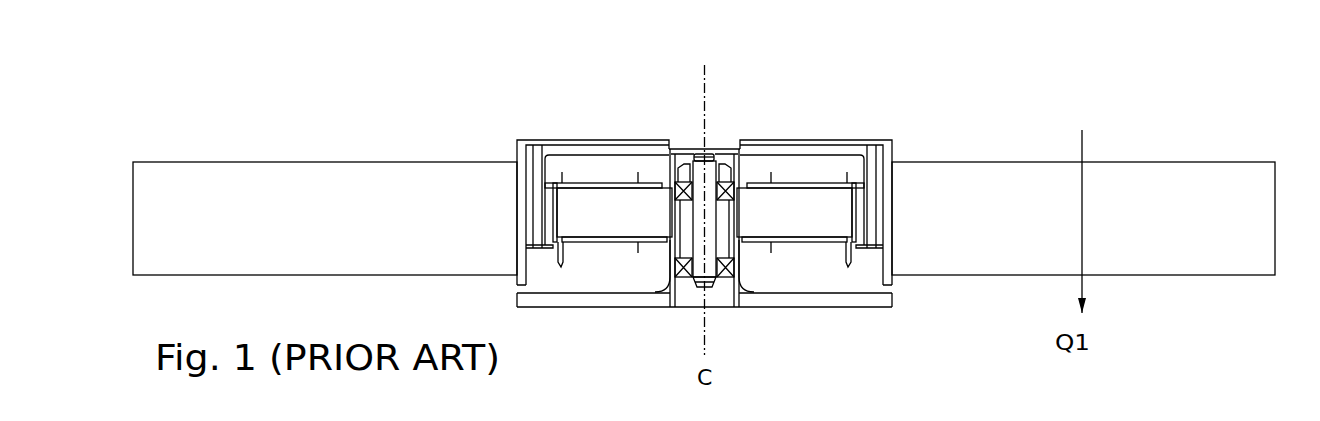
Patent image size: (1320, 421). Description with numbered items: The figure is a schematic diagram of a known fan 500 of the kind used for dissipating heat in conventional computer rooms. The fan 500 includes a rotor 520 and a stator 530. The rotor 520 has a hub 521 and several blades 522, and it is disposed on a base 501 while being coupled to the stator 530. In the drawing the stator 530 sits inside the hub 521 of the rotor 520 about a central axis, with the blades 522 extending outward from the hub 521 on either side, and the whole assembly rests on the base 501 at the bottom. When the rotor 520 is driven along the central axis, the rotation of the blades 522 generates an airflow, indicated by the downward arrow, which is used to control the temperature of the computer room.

The fan 500 is at (1270, 68).
The base 501 is at (810, 303).
The rotor 520 is at (990, 78).
The hub 521 is at (865, 150).
The blades 522 is at (935, 178).
The stator 530 is at (800, 200).